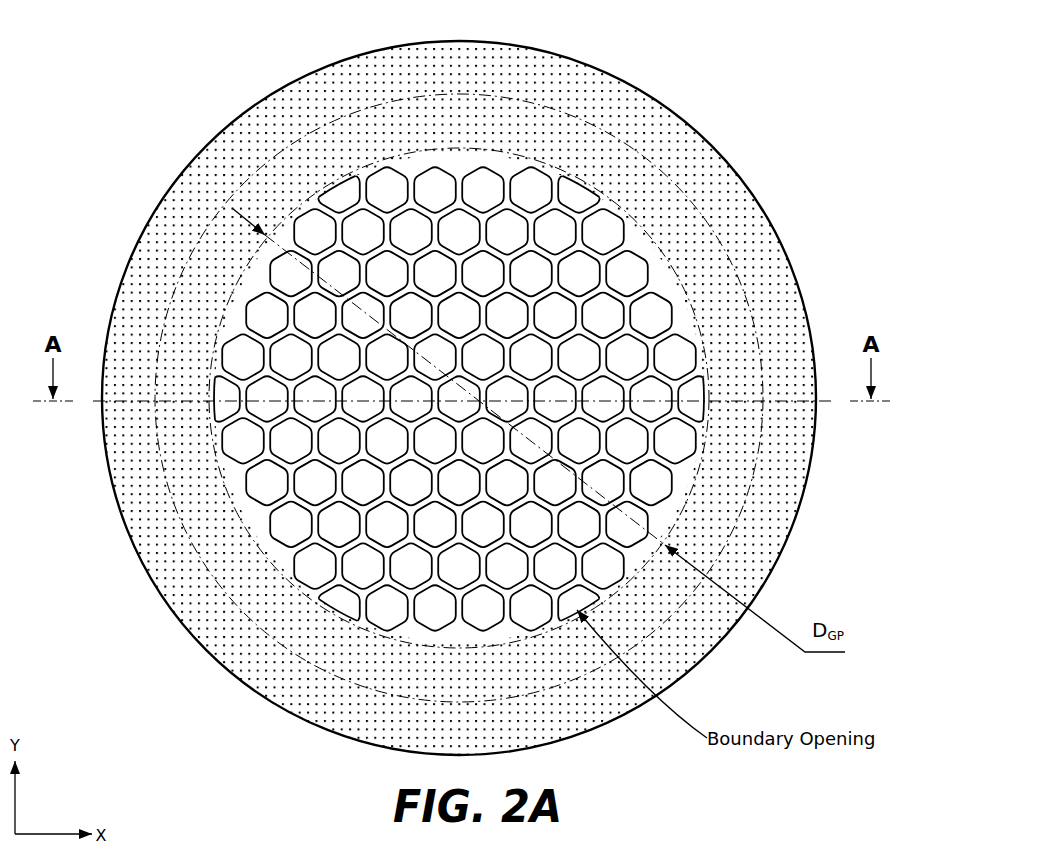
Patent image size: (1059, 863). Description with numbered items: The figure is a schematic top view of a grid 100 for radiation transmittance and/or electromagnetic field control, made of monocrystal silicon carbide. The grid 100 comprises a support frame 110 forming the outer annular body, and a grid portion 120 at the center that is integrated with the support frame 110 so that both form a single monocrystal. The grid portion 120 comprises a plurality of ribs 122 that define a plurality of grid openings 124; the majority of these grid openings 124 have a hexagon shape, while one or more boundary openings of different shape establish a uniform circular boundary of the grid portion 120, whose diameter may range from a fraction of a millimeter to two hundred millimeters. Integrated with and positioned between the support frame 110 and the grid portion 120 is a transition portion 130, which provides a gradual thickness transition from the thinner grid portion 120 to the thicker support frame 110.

The grid 100 is at (672, 72).
The support frame 110 is at (692, 158).
The transition portion 130 is at (677, 222).
The grid portion 120 is at (530, 398).
The ribs 122 is at (675, 330).
The grid openings 124 is at (678, 358).